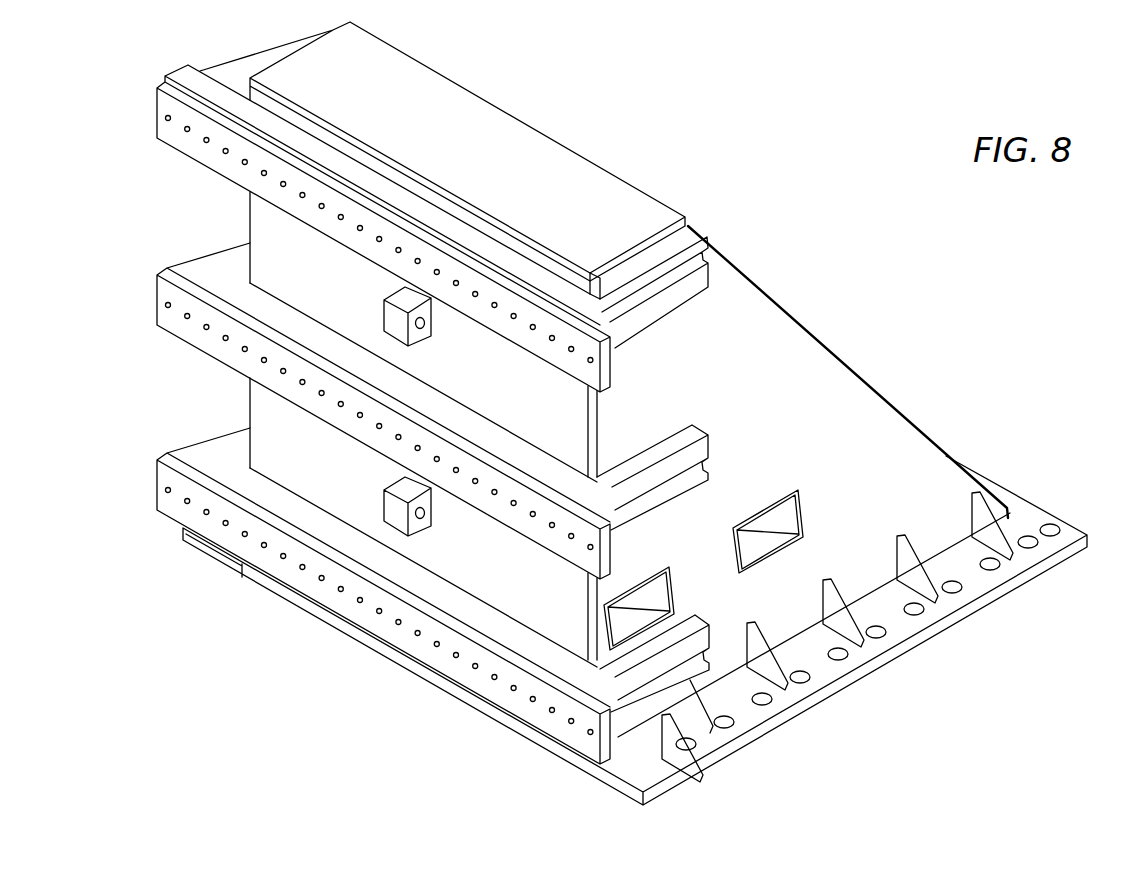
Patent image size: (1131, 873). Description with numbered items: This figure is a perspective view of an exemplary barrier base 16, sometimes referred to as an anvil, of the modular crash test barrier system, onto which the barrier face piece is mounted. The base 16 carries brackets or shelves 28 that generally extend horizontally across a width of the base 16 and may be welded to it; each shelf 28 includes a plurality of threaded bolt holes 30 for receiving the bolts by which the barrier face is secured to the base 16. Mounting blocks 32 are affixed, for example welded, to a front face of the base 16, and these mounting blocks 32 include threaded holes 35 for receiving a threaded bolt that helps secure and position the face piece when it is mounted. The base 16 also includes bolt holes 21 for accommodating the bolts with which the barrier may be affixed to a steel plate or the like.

The barrier base 16 is at (797, 433).
The bolt holes 21 is at (792, 672).
The shelf 28 is at (665, 306).
The bolt holes 30 is at (533, 325).
The mounting block 32 is at (386, 318).
The threaded holes 35 is at (425, 325).